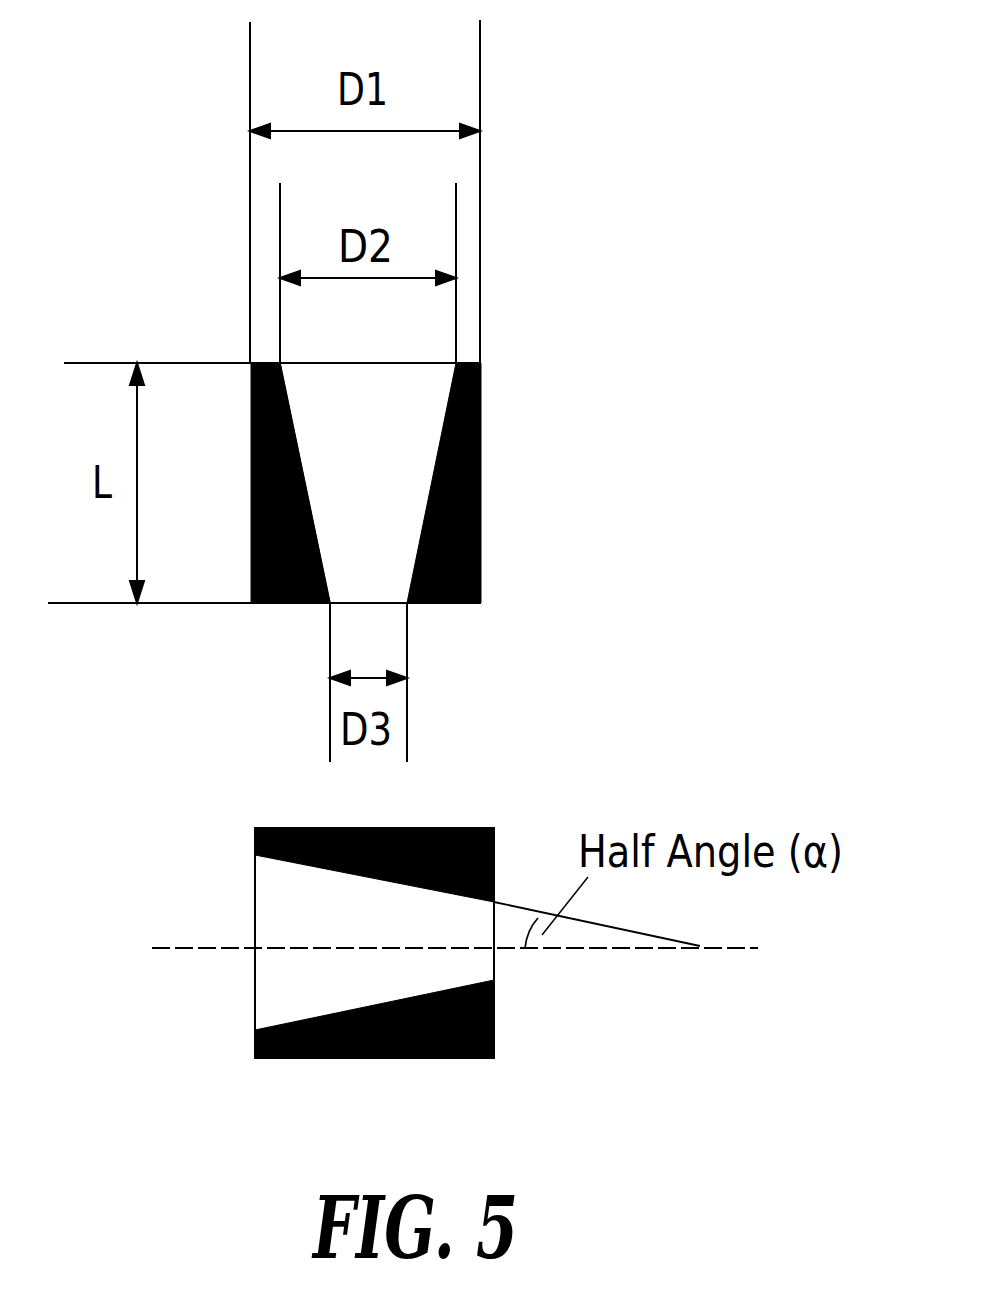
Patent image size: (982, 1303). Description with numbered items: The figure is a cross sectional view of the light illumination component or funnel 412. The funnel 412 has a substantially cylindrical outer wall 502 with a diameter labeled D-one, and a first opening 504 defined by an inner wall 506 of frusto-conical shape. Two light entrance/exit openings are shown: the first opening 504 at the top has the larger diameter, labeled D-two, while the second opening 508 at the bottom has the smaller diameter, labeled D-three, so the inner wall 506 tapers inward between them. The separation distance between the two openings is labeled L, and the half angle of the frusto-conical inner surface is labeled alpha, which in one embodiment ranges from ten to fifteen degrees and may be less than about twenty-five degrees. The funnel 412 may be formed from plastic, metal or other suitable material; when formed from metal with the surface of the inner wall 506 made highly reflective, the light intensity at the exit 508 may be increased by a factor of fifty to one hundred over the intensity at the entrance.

The light illumination funnel 412 is at (467, 423).
The cylindrical outer wall 502 is at (485, 540).
The first opening 504 is at (392, 372).
The inner wall 506 is at (312, 513).
The second opening 508 is at (387, 592).